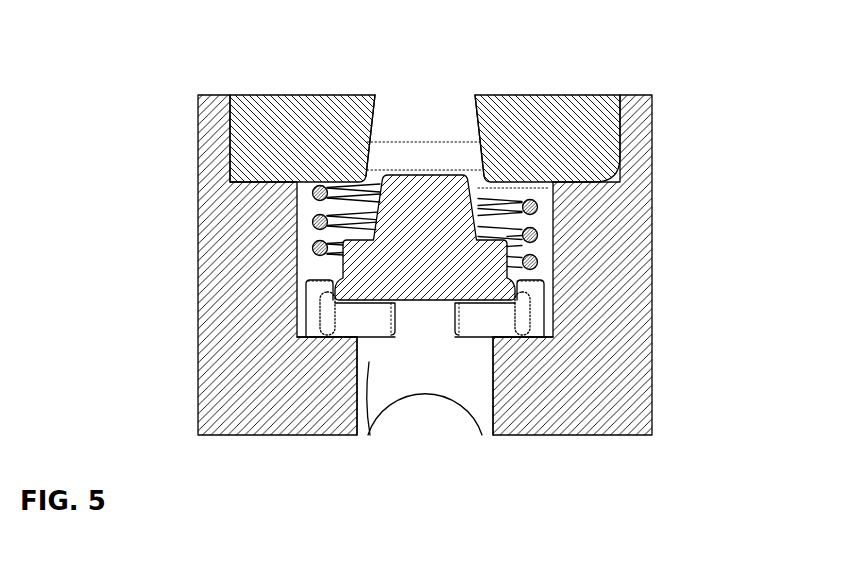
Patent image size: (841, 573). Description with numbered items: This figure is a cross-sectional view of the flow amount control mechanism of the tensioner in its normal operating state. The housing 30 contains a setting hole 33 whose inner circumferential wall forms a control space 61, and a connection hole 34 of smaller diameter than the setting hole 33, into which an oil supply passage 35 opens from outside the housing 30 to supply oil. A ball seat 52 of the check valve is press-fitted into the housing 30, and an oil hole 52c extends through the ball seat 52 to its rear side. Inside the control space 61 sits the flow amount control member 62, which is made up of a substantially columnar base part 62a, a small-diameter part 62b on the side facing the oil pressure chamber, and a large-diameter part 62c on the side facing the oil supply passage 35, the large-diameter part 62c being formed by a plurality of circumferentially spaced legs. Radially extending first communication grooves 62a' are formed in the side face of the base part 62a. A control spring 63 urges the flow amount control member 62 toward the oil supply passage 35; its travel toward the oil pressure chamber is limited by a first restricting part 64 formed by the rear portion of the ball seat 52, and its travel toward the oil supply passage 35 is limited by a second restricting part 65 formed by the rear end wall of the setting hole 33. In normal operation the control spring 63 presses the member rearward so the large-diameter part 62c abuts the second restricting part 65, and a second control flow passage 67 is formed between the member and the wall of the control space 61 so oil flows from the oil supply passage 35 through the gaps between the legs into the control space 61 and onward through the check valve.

The housing 30 is at (624, 410).
The setting hole 33 is at (555, 330).
The connection hole 34 is at (352, 416).
The oil supply passage 35 is at (418, 402).
The ball seat 52 is at (595, 140).
The oil hole 52c is at (433, 128).
The control space 61 is at (310, 279).
The flow amount control member 62 is at (340, 212).
The base part 62a is at (525, 242).
The first communication grooves 62a' is at (424, 226).
The small-diameter part 62b is at (553, 187).
The large-diameter part 62c is at (556, 288).
The control spring 63 is at (330, 184).
The first restricting part 64 is at (359, 174).
The second restricting part 65 is at (318, 346).
The second control flow passage 67 is at (434, 332).